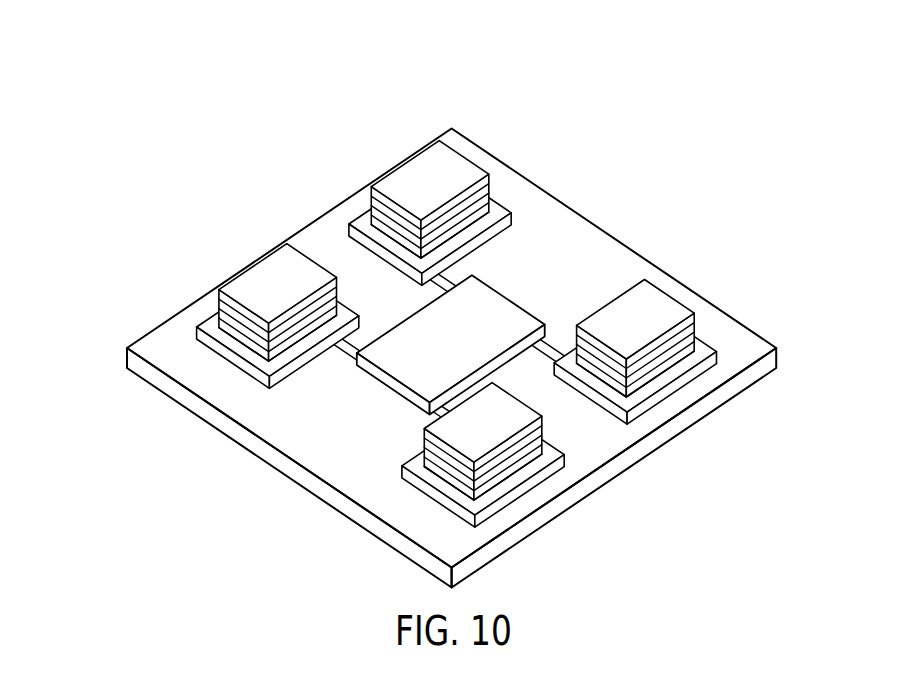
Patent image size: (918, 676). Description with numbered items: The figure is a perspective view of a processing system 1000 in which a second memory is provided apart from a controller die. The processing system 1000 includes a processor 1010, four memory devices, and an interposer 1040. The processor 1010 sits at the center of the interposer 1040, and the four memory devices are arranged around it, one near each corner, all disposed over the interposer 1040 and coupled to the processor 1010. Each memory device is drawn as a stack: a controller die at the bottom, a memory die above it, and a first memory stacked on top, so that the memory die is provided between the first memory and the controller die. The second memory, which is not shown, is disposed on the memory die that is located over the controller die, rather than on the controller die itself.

The processing system 1000 is at (446, 307).
The processor 1010 is at (512, 302).
The interposer 1040 is at (630, 453).